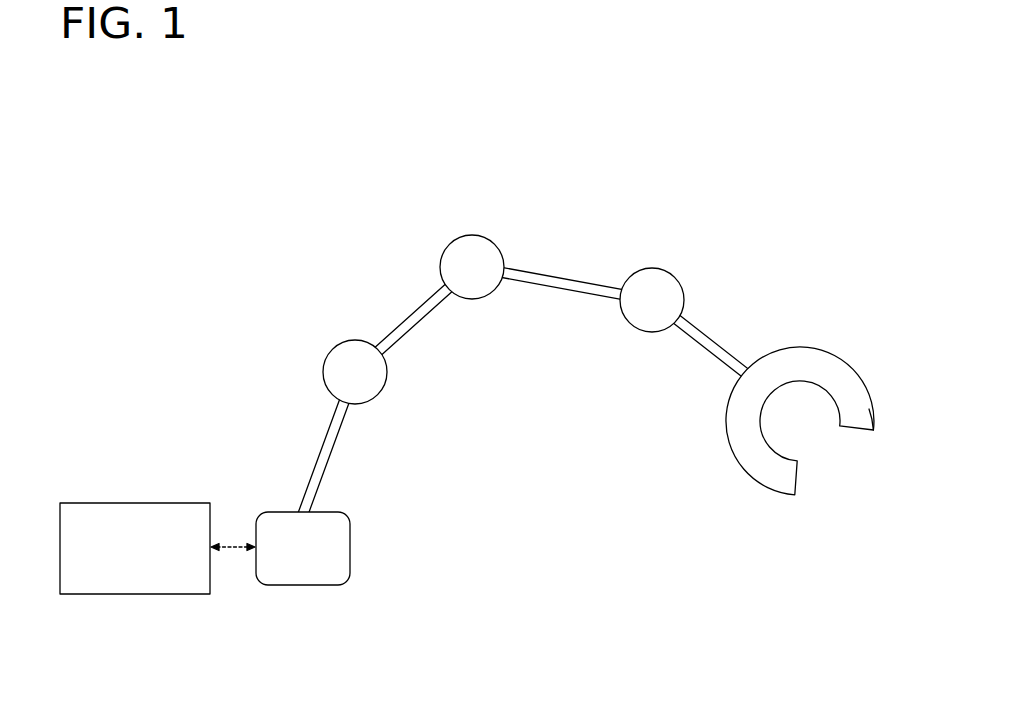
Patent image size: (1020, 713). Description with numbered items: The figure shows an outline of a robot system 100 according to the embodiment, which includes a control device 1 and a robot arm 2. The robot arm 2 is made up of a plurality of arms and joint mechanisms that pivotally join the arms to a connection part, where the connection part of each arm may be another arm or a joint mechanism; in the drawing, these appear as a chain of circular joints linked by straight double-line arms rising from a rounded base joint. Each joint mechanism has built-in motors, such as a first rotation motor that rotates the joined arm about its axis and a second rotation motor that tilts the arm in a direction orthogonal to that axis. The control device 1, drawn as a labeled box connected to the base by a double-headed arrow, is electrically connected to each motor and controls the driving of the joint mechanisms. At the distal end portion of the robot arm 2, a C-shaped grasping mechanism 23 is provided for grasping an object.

The control device 1 is at (141, 503).
The robot system 100 is at (533, 134).
The robot arm 2 is at (800, 348).
The grasping mechanism 23 is at (882, 418).